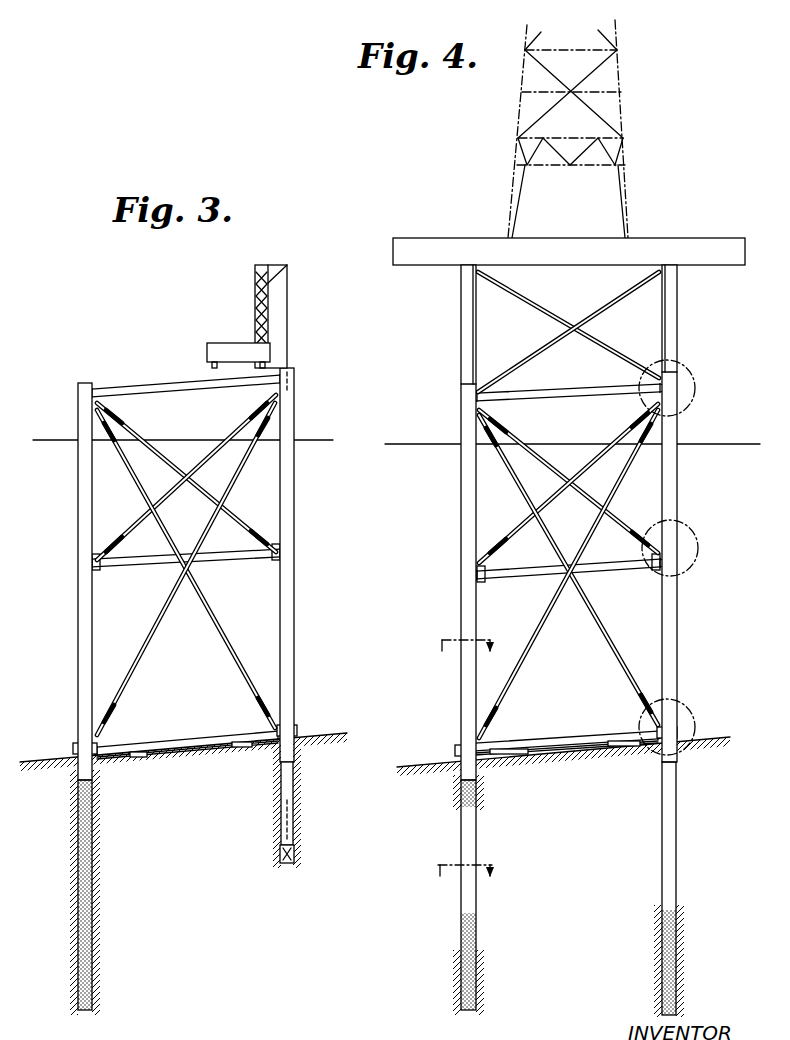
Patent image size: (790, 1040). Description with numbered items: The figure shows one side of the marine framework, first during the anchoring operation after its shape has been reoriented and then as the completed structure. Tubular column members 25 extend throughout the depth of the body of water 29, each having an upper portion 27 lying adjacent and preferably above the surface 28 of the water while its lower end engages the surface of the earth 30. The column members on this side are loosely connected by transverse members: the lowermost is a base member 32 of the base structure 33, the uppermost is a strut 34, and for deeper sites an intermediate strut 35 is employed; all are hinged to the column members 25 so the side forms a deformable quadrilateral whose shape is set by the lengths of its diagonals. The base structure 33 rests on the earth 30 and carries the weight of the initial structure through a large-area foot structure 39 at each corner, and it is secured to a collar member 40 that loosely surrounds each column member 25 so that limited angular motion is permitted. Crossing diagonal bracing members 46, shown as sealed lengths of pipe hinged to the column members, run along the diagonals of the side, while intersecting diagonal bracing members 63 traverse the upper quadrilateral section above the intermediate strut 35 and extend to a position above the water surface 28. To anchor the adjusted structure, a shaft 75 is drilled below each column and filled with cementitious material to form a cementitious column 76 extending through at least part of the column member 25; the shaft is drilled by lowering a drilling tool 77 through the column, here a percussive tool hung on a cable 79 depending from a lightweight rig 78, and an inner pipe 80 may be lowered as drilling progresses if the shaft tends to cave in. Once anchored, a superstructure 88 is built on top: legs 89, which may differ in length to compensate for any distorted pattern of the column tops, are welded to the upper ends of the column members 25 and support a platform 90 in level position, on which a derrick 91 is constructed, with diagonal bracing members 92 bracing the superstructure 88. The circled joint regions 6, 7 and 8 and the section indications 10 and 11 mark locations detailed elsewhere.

In FIG. 4, the detail circle of upper joint 6 is at (695, 367).
In FIG. 4, the detail circle of middle joint 7 is at (694, 539).
In FIG. 4, the detail circle of lower joint 8 is at (695, 705).
In FIG. 4, the section line 10- 10 is at (469, 651).
In FIG. 4, the section line 11- 11 is at (469, 875).
In FIG. 3, the tubular column member 25 is at (80, 607).
In FIG. 4, the tubular column member 25 is at (672, 500).
In FIG. 3, the upper portion 27 is at (296, 375).
In FIG. 3, the surface of the body of water 28 is at (307, 440).
In FIG. 4, the surface of the body of water 28 is at (695, 444).
In FIG. 3, the body of water 29 is at (56, 455).
In FIG. 4, the body of water 29 is at (441, 459).
In FIG. 3, the surface of the earth 30 is at (313, 734).
In FIG. 4, the surface of the earth 30 is at (430, 762).
In FIG. 3, the base member 32 is at (192, 733).
In FIG. 4, the base member 32 is at (563, 740).
In FIG. 3, the base structure 33 is at (220, 748).
In FIG. 4, the base structure 33 is at (552, 750).
In FIG. 3, the strut 34 is at (175, 394).
In FIG. 4, the strut 34 is at (565, 394).
In FIG. 3, the intermediate strut 35 is at (137, 572).
In FIG. 4, the intermediate strut 35 is at (523, 573).
In FIG. 3, the foot structure 39 is at (140, 759).
In FIG. 4, the foot structure 39 is at (628, 749).
In FIG. 3, the collar member 40 is at (73, 747).
In FIG. 4, the collar member 40 is at (455, 748).
In FIG. 3, the diagonal bracing member 46 is at (126, 682).
In FIG. 4, the diagonal bracing member 46 is at (627, 673).
In FIG. 3, the diagonal bracing member 63 is at (254, 524).
In FIG. 4, the diagonal bracing member 63 is at (503, 543).
In FIG. 3, the shaft 75 is at (88, 922).
In FIG. 4, the shaft 75 is at (471, 970).
In FIG. 3, the cementitious column 76 is at (93, 860).
In FIG. 4, the cementitious column 76 is at (473, 925).
In FIG. 3, the drilling tool 77 is at (296, 853).
In FIG. 3, the lightweight rig 78 is at (255, 308).
In FIG. 3, the cable 79 is at (288, 304).
In FIG. 3, the inner pipe 80 is at (293, 797).
In FIG. 4, the superstructure 88 is at (684, 313).
In FIG. 4, the leg 89 is at (462, 324).
In FIG. 4, the platform 90 is at (660, 248).
In FIG. 4, the derrick 91 is at (624, 124).
In FIG. 4, the diagonal bracing member 92 is at (580, 322).